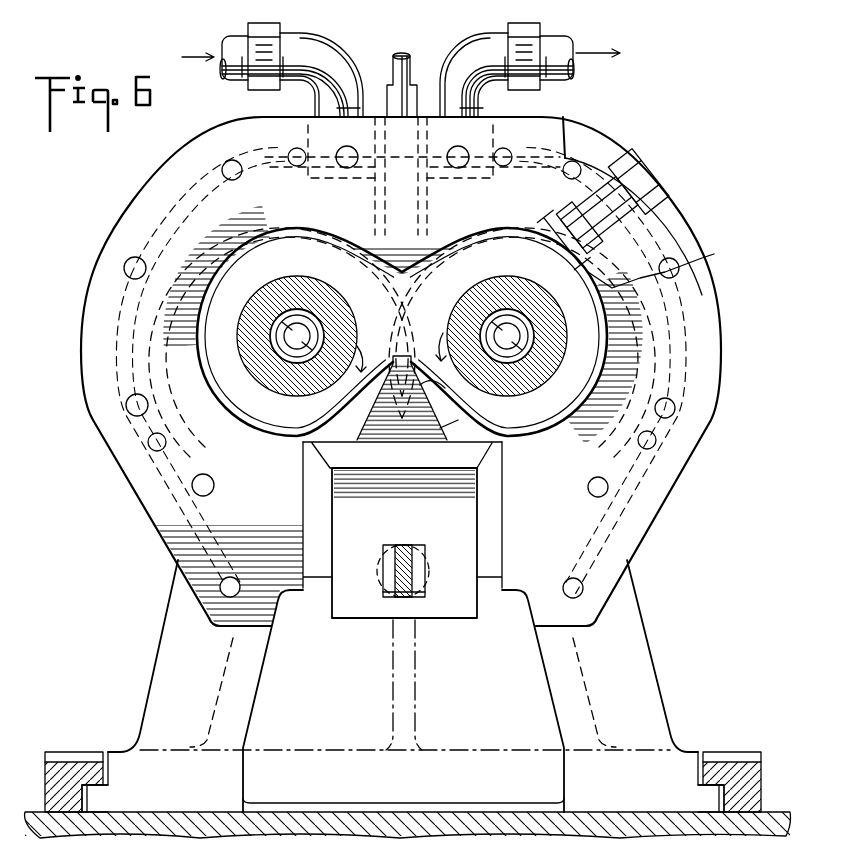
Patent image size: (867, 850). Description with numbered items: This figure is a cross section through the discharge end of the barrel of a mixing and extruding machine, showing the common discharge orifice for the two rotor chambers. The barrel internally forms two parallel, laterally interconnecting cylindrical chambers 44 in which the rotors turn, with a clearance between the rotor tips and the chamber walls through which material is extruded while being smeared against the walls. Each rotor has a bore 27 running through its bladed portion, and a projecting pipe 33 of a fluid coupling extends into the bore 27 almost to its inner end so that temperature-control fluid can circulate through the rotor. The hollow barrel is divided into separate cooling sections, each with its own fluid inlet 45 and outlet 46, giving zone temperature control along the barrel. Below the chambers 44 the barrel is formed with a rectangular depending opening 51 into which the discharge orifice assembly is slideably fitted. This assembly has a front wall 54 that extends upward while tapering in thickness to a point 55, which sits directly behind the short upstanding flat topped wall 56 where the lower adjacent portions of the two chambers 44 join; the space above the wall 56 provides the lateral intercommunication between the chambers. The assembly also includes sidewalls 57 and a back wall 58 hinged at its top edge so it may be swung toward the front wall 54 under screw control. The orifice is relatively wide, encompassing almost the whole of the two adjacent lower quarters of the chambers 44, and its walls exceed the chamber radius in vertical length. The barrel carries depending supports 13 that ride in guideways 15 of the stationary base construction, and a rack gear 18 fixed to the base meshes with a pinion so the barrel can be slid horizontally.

The depending supports 13 is at (254, 702).
The guideways 15 is at (98, 786).
The rack gear 18 is at (65, 752).
The bore 27 is at (294, 307).
The projecting pipe 33 is at (287, 352).
The cylindrical chambers 44 is at (555, 246).
The fluid inlet 45 is at (323, 100).
The fluid outlet 46 is at (486, 100).
The rectangular depending opening 51 is at (498, 514).
The front wall 54 is at (448, 428).
The point 55 is at (435, 382).
The short upstanding flat topped wall 56 is at (402, 356).
The sidewalls 57 is at (312, 540).
The back wall 58 is at (351, 612).